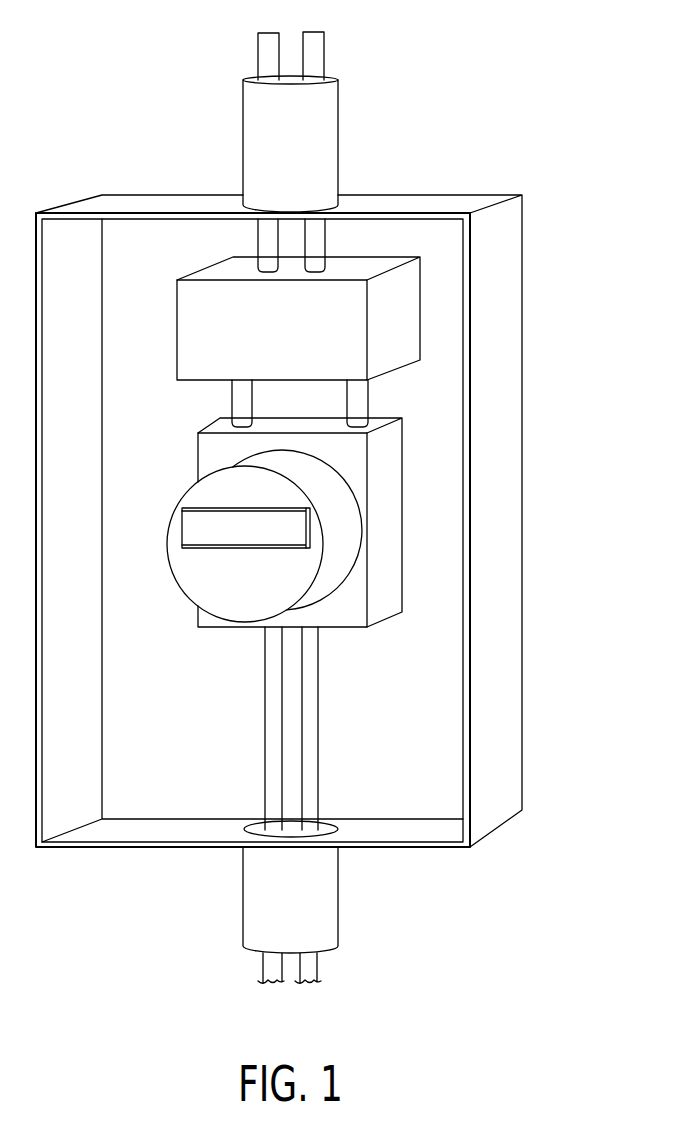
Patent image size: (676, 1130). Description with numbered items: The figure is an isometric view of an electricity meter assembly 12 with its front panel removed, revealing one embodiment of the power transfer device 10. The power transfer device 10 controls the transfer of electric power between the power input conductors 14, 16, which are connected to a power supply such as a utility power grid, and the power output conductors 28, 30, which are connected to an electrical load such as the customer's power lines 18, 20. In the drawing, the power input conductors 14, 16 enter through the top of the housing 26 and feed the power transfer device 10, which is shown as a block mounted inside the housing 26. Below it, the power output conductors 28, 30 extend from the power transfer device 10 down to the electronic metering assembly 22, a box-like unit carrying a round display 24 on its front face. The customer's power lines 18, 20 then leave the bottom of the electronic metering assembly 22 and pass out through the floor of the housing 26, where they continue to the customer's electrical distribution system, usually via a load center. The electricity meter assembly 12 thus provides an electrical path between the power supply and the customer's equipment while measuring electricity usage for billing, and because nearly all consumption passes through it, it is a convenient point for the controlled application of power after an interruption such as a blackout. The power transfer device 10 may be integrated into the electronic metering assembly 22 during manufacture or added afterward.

The power transfer device 10 is at (293, 333).
The electricity meter assembly 12 is at (127, 152).
The power input conductor 14 is at (270, 40).
The power input conductor 16 is at (313, 42).
The customer's power line 18 is at (272, 985).
The customer's power line 20 is at (310, 985).
The electronic metering assembly 22 is at (383, 517).
The display 24 is at (188, 565).
The housing 26 is at (500, 383).
The power output conductor 28 is at (250, 393).
The power output conductor 30 is at (357, 400).